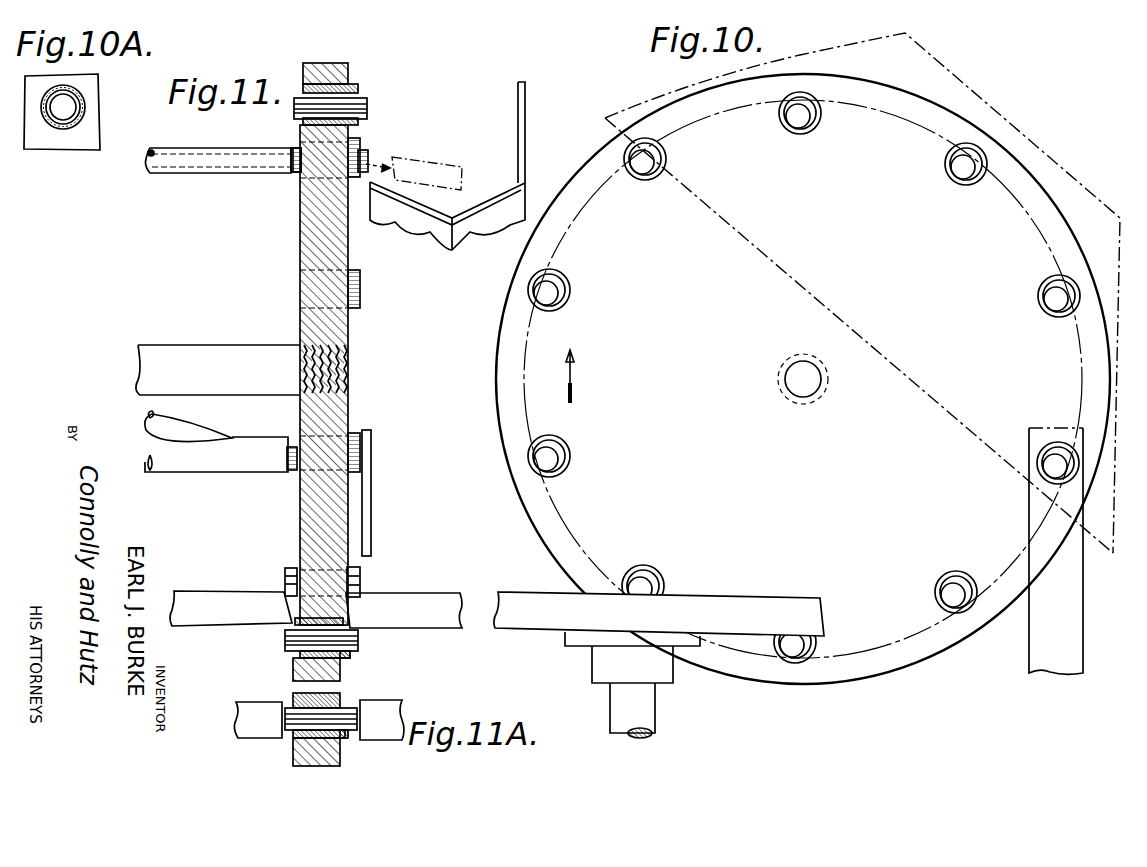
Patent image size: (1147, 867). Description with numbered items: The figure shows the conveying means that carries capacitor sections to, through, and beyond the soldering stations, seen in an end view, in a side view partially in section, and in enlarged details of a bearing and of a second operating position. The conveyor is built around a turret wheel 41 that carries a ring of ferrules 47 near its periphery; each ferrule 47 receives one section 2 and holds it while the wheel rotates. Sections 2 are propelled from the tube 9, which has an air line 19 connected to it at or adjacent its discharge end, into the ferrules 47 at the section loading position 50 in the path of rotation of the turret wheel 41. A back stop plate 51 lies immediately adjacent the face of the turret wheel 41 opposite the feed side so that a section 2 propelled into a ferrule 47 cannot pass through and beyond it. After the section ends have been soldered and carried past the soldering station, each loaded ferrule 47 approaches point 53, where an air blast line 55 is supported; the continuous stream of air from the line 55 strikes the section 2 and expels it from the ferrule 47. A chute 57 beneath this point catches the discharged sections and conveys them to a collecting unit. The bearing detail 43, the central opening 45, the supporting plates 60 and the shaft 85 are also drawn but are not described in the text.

In FIG. 11, the section 2 is at (362, 110).
In FIG. 11A, the section 2 is at (296, 712).
In FIG. 10, the section 2 is at (546, 298).
In FIG. 11, the tube 9 is at (195, 465).
In FIG. 11, the air line 19 is at (192, 416).
In FIG. 10A, the turret wheel 41 is at (52, 140).
In FIG. 11, the turret wheel 41 is at (348, 250).
In FIG. 11A, the turret wheel 41 is at (292, 752).
In FIG. 10, the turret wheel 41 is at (915, 650).
In FIG. 10A, the bearing 43 is at (84, 103).
In FIG. 11, the shaft 45 is at (215, 355).
In FIG. 10, the shaft 45 is at (821, 379).
In FIG. 10A, the ferrule 47 is at (76, 120).
In FIG. 11, the ferrule 47 is at (356, 86).
In FIG. 11A, the ferrule 47 is at (346, 740).
In FIG. 10, the ferrule 47 is at (530, 285).
In FIG. 11, the section loading position 50 is at (296, 434).
In FIG. 11, the back stop plate 51 is at (370, 515).
In FIG. 10, the back stop plate 51 is at (1030, 668).
In FIG. 11, the point 53 is at (293, 172).
In FIG. 11, the air blast line 55 is at (200, 160).
In FIG. 11, the chute 57 is at (465, 210).
In FIG. 10, the chute 57 is at (775, 262).
In FIG. 11, the plate 60 is at (220, 618).
In FIG. 11A, the plate 60 is at (238, 716).
In FIG. 10, the plate 60 is at (585, 625).
In FIG. 10, the shaft 85 is at (645, 715).